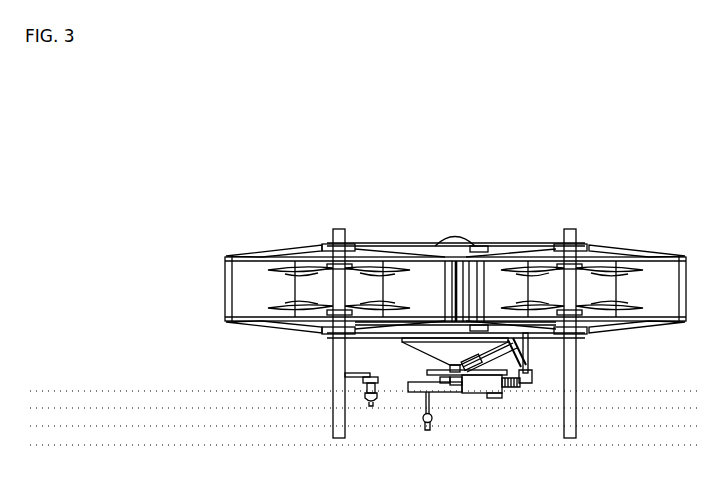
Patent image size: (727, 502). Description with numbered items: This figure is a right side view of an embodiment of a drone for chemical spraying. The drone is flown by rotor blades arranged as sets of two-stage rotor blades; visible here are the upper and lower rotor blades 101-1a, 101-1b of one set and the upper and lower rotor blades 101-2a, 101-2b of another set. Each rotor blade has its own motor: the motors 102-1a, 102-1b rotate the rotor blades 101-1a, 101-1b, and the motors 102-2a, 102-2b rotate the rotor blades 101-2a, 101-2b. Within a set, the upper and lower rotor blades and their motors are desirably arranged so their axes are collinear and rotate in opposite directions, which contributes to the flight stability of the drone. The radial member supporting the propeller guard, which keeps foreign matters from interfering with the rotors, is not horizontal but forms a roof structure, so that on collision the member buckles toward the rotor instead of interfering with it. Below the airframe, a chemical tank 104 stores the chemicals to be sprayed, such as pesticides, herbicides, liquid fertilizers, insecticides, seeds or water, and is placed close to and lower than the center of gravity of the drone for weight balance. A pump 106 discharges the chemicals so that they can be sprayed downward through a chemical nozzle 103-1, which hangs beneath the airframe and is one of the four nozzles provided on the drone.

The rotor blade 101-1a is at (622, 261).
The rotor blade 101-1b is at (632, 326).
The rotor blade 101-2a is at (273, 255).
The rotor blade 101-2b is at (275, 326).
The motor 102-1a is at (554, 262).
The motor 102-1b is at (587, 300).
The motor 102-2a is at (360, 262).
The motor 102-2b is at (322, 300).
The chemical nozzle 103-1 is at (372, 407).
The chemical tank 104 is at (425, 351).
The pump 106 is at (477, 396).